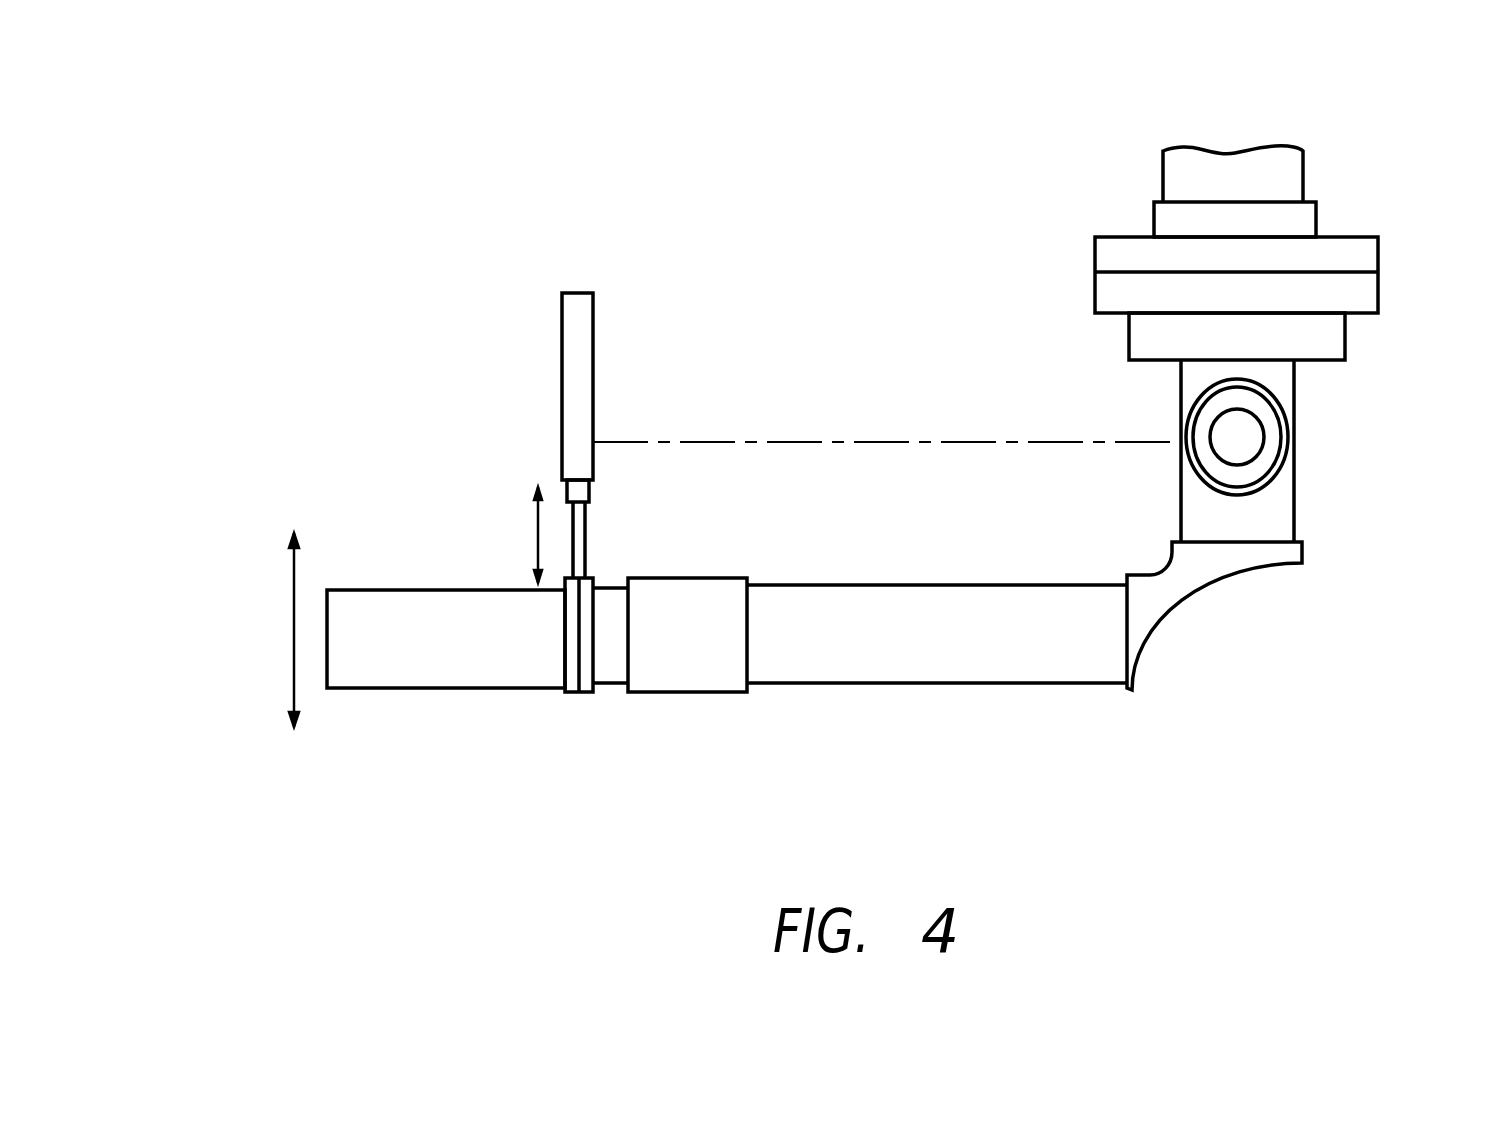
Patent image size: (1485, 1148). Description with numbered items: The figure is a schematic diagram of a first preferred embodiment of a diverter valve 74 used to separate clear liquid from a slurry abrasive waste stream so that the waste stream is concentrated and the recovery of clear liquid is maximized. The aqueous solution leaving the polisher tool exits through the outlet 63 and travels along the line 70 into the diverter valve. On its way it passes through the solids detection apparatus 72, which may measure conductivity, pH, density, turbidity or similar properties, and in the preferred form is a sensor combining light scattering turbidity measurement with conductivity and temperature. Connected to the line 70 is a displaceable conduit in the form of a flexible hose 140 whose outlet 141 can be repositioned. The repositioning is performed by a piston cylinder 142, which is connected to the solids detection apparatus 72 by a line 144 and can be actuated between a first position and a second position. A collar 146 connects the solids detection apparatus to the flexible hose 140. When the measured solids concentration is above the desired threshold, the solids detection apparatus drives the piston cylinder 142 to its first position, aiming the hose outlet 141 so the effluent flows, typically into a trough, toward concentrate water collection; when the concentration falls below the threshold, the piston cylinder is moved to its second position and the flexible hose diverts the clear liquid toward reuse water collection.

The outlet 63 is at (1283, 178).
The line 70 is at (1297, 380).
The solids detection apparatus 72 is at (1272, 450).
The diverter valve 74 is at (862, 353).
The flexible hose 140 is at (932, 663).
The outlet 141 is at (325, 638).
The piston cylinder 142 is at (593, 385).
The line 144 is at (827, 442).
The collar 146 is at (577, 692).